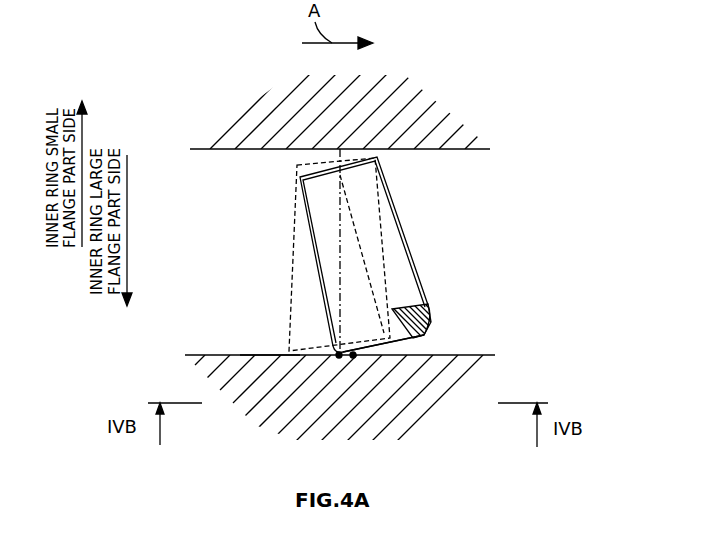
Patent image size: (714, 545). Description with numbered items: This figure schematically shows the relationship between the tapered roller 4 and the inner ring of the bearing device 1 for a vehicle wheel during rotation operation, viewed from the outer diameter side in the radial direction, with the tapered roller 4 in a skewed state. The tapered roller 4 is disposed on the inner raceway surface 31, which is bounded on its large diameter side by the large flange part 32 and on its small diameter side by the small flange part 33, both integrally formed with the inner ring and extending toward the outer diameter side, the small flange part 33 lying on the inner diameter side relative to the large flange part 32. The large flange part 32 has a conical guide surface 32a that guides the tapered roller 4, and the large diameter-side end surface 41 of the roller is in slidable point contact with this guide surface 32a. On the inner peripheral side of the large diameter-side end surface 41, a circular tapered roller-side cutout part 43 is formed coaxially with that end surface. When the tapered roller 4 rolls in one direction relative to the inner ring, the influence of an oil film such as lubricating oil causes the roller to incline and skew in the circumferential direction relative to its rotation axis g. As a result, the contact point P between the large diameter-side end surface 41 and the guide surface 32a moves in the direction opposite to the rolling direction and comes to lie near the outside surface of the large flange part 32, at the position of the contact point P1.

The tapered roller bearing 1 is at (548, 50).
The tapered roller 4 is at (397, 197).
The large diameter-side end surface 41 is at (428, 332).
The tapered roller-side cutout part 43 is at (418, 340).
The inner raceway surface 31 is at (257, 272).
The large flange part 32 is at (210, 350).
The guide surface 32a is at (268, 357).
The small flange part 33 is at (453, 150).
The rotation axis g is at (335, 191).
The contact point P1 is at (339, 358).
The contact point P is at (355, 358).